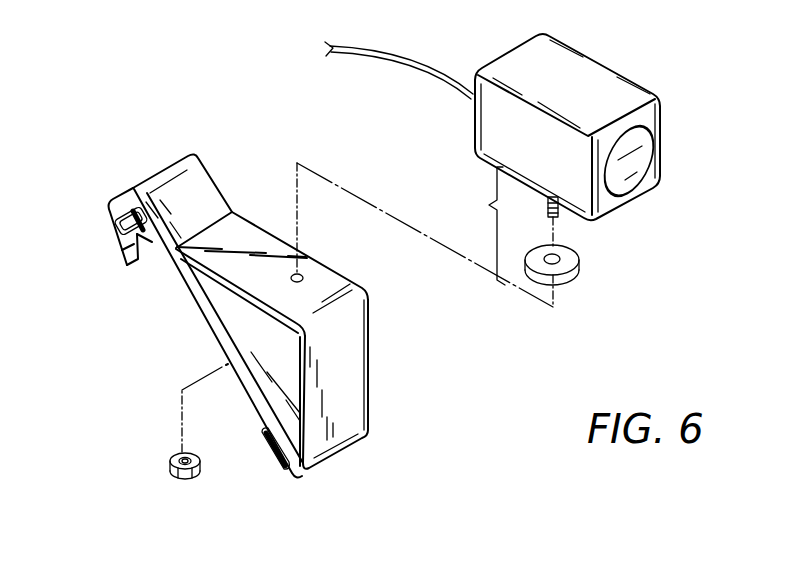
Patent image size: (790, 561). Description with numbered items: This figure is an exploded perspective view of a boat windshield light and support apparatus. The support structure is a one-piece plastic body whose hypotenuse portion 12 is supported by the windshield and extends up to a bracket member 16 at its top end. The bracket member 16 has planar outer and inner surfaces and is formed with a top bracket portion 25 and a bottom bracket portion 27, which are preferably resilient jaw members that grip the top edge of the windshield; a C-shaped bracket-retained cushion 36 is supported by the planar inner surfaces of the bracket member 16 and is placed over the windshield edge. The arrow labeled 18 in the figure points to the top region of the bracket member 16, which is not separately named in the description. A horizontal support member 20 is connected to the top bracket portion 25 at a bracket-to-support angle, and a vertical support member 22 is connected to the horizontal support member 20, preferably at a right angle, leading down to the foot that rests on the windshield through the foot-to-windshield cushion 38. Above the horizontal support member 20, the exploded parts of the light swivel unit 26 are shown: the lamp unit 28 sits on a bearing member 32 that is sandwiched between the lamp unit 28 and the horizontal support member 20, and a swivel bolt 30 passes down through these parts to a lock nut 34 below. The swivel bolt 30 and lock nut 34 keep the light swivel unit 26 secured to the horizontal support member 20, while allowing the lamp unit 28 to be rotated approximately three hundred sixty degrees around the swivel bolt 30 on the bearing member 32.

The hypotenuse portion 12 is at (210, 330).
The bracket member 16 is at (119, 229).
The mounting flange 18 is at (180, 203).
The horizontal support member 20 is at (243, 230).
The vertical support member 22 is at (353, 347).
The top bracket portion 25 is at (200, 178).
The light swivel unit 26 is at (467, 226).
The bottom bracket portion 27 is at (120, 246).
The lamp unit 28 is at (624, 96).
The swivel bolt 30 is at (560, 218).
The bearing member 32 is at (570, 283).
The lock nut 34 is at (172, 457).
The bracket-retained cushion 36 is at (112, 212).
The foot-to-windshield cushion 38 is at (278, 458).